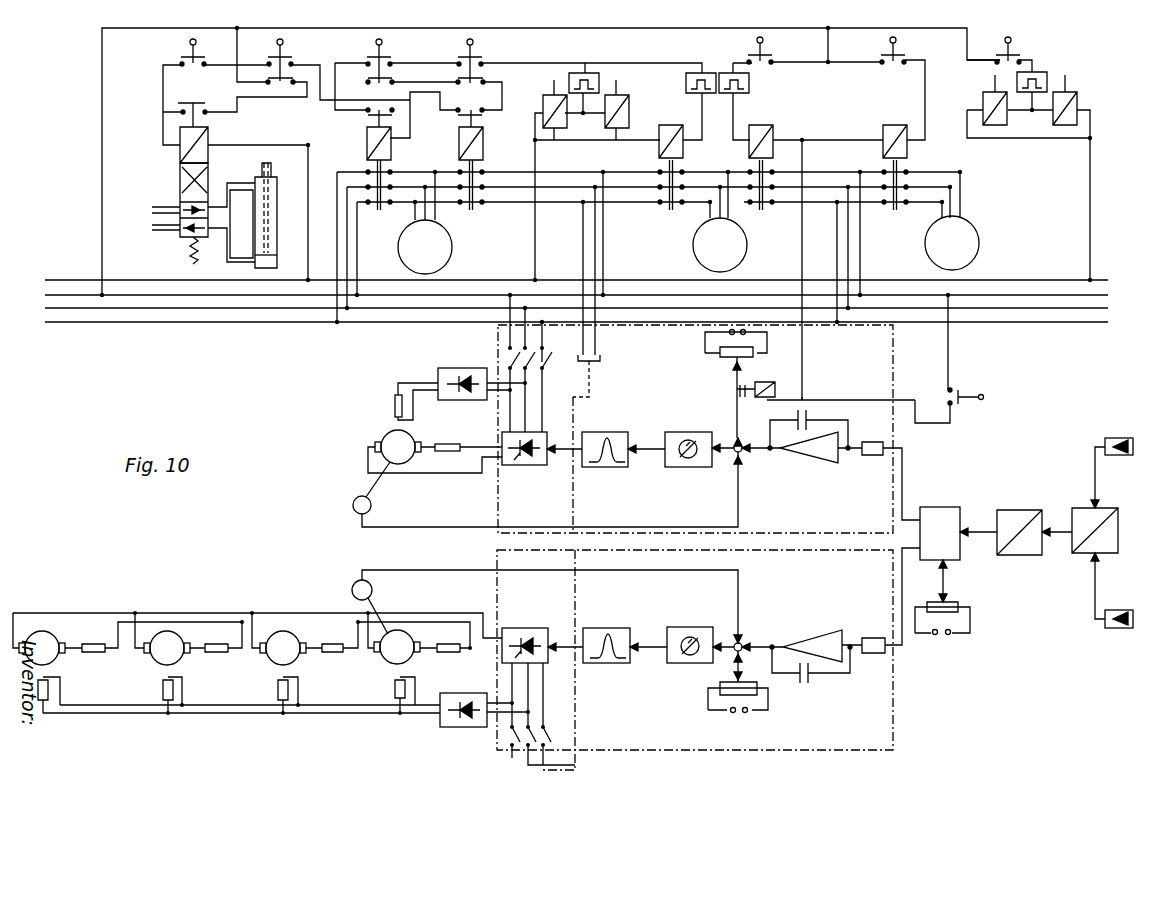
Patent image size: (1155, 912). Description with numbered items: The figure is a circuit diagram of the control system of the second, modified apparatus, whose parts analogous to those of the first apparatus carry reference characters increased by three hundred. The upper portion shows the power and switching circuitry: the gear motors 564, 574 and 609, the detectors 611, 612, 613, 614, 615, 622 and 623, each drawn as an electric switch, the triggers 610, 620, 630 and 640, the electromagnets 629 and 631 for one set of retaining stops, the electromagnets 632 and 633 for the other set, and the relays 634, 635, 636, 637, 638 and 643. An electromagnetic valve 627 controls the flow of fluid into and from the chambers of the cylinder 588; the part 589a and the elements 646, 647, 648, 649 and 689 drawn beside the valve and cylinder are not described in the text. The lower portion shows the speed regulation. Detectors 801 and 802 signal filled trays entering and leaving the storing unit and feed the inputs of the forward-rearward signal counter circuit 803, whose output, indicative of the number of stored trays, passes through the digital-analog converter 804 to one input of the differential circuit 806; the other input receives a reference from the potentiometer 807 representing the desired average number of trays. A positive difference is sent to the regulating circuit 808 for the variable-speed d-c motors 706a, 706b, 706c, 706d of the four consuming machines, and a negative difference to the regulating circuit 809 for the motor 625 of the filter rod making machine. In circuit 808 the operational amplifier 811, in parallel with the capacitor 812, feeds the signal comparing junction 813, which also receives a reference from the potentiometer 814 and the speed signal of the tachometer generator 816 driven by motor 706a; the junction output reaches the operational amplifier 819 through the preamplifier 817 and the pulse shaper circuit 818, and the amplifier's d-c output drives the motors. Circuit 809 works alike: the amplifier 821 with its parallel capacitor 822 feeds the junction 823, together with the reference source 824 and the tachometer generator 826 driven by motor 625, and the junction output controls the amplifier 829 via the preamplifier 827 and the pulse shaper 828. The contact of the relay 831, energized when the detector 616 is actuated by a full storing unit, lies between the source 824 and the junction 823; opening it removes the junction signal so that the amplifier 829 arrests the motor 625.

The gear motor 564 is at (734, 260).
The gear motor 574 is at (970, 248).
The cylinder 588 is at (277, 183).
The piston rod 589a is at (265, 174).
The gear motor 609 is at (438, 265).
The trigger 610 is at (603, 50).
The detector 611 is at (381, 47).
The detector 612 is at (896, 42).
The detector 613 is at (474, 47).
The detector 614 is at (282, 44).
The detector 615 is at (756, 47).
The detector 616 is at (970, 386).
The trigger 620 is at (686, 85).
The detector 622 is at (1011, 42).
The detector 623 is at (190, 44).
The motor 625 is at (382, 437).
The electromagnetic valve 627 is at (208, 182).
The electromagnet 629 is at (554, 128).
The trigger 630 is at (746, 83).
The electromagnet 631 is at (618, 128).
The electromagnet 632 is at (983, 108).
The electromagnet 633 is at (1079, 98).
The relay 634 is at (391, 140).
The relay 635 is at (483, 143).
The relay 636 is at (690, 130).
The relay 637 is at (781, 128).
The relay 638 is at (910, 130).
The trigger 640 is at (1035, 72).
The relay 643 is at (210, 136).
The spring 646 is at (226, 248).
The hydraulic line 647 is at (237, 210).
The hydraulic line 648 is at (160, 230).
The hydraulic line 649 is at (173, 198).
The cylinder port 689 is at (272, 255).
The variable-speed d-c motor 706a is at (414, 656).
The variable-speed d-c motor 706b is at (299, 656).
The variable-speed d-c motor 706c is at (184, 656).
The variable-speed d-c motor 706d is at (64, 656).
The detector 801 is at (1108, 438).
The detector 802 is at (1108, 628).
The forward-rearward signal counter circuit 803 is at (1079, 508).
The digital-analog converter 804 is at (1020, 556).
The differential circuit 806 is at (938, 506).
The source of reference signals 807 is at (971, 634).
The regulating circuit 808 is at (898, 662).
The regulating circuit 809 is at (893, 384).
The operational amplifier 811 is at (807, 634).
The capacitor 812 is at (810, 684).
The signal comparing junction 813 is at (742, 644).
The source of reference signals 814 is at (726, 714).
The tachometer generator 816 is at (353, 588).
The preamplifier 817 is at (702, 626).
The pulse shaper circuit 818 is at (637, 628).
The operational amplifier 819 is at (550, 624).
The operational amplifier 821 is at (816, 458).
The capacitor 822 is at (807, 410).
The signal comparing junction 823 is at (734, 406).
The source of reference signals 824 is at (712, 346).
The tachometer generator 826 is at (351, 508).
The preamplifier 827 is at (696, 468).
The pulse shaper circuit 828 is at (608, 467).
The operational amplifier 829 is at (544, 464).
The relay 831 is at (780, 387).